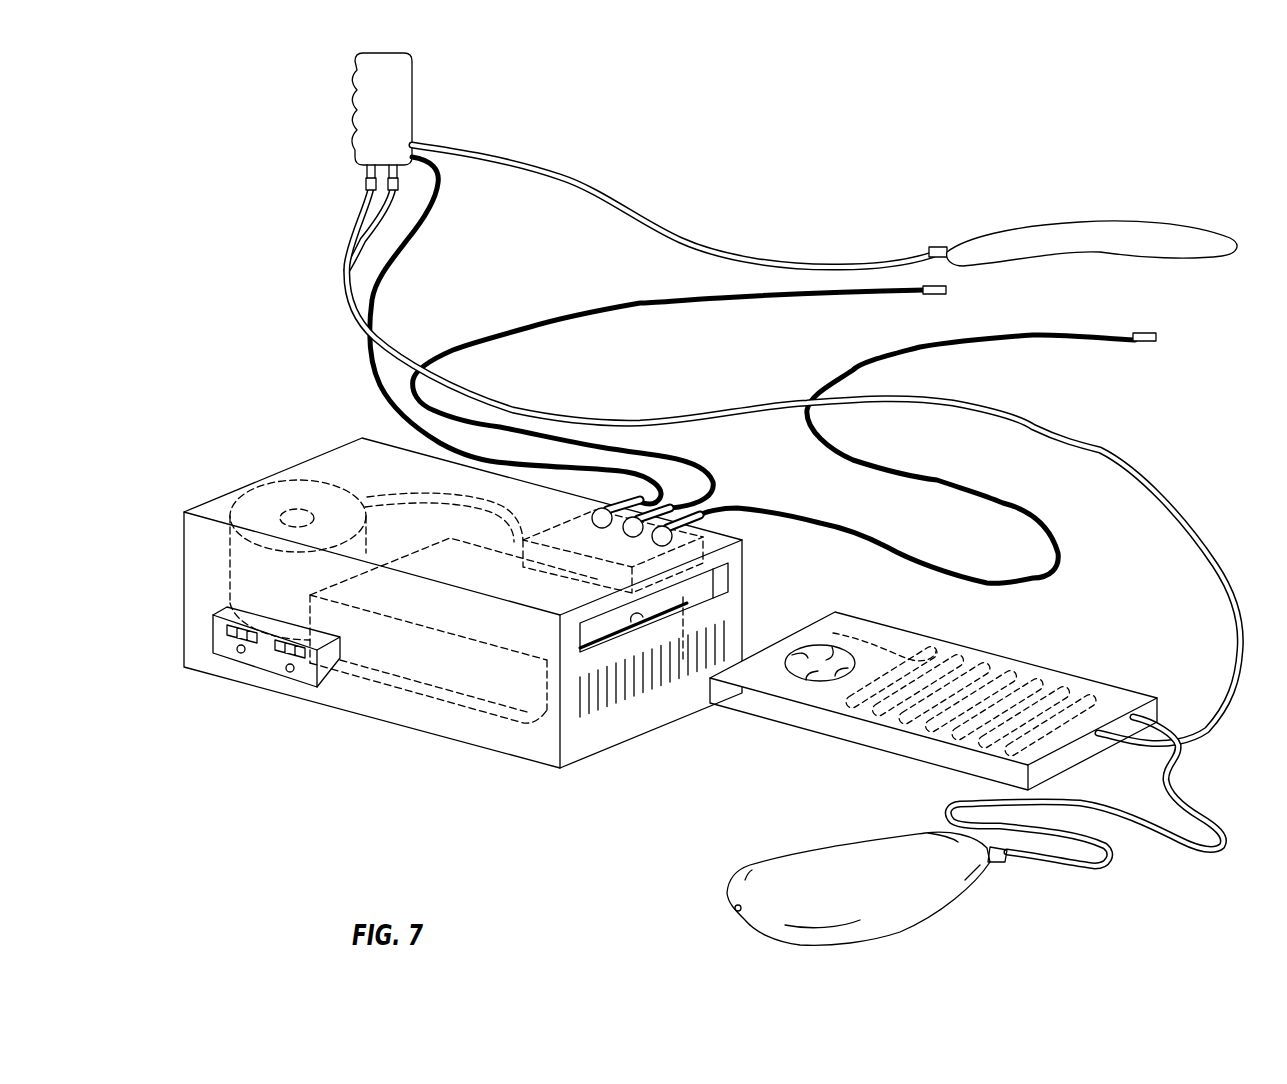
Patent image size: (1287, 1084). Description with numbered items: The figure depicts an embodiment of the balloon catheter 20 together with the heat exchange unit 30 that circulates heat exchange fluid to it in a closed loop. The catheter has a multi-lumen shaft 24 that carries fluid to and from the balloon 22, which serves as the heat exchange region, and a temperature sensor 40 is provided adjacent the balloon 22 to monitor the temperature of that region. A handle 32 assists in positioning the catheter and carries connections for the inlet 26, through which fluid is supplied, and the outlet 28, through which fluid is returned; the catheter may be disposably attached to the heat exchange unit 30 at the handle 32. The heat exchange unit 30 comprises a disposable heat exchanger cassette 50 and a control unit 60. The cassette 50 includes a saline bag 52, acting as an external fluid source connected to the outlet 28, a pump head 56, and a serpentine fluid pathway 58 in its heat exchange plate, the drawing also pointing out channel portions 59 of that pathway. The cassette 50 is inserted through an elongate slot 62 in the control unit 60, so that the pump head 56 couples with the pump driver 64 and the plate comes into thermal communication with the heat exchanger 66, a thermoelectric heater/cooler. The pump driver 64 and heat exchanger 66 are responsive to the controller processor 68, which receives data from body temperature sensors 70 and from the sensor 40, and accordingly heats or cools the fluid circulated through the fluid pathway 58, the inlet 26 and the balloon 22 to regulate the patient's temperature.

The balloon catheter 20 is at (908, 177).
The balloon 22 is at (1040, 227).
The shaft 24 is at (650, 214).
The inlet 26 is at (392, 202).
The outlet 28 is at (362, 210).
The heat exchange unit 30 is at (419, 770).
The handle 32 is at (412, 95).
The temperature sensor 40 is at (940, 247).
The disposable heat exchanger cassette 50 is at (947, 705).
The saline bag 52 is at (827, 862).
The pump head 56 is at (1033, 673).
The fluid pathway 58 is at (813, 660).
The serpentine fluid channels 59 is at (957, 655).
The control unit 60 is at (173, 595).
The elongate slot 62 is at (647, 623).
The pump driver 64 is at (260, 508).
The heat exchanger 66 is at (400, 667).
The controller processor 68 is at (571, 548).
The body temperature sensors 70 is at (930, 294).